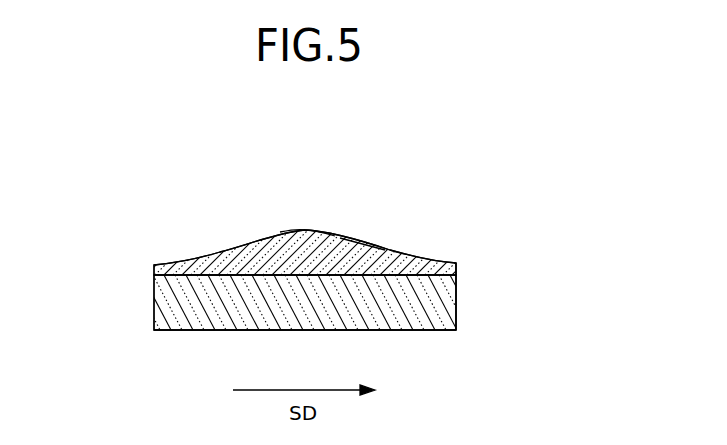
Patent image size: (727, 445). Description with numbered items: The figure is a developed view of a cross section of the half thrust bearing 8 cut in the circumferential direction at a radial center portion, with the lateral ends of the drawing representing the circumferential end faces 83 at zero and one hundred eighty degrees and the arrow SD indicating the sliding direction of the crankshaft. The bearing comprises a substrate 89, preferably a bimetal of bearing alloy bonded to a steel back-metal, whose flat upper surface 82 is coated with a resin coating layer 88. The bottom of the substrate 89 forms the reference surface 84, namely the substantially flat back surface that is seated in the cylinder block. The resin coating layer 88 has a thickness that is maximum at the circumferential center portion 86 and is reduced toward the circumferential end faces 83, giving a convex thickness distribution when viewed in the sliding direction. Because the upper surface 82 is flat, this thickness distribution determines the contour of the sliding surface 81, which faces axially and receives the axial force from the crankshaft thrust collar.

The half thrust bearing 8 is at (466, 183).
The sliding surface 81 is at (223, 255).
The upper surface 82 is at (180, 273).
The circumferential end face 83 is at (154, 300).
The reference surface 84 is at (205, 330).
The circumferential center portion 86 is at (305, 230).
The resin coating layer 88 is at (355, 257).
The substrate 89 is at (435, 305).